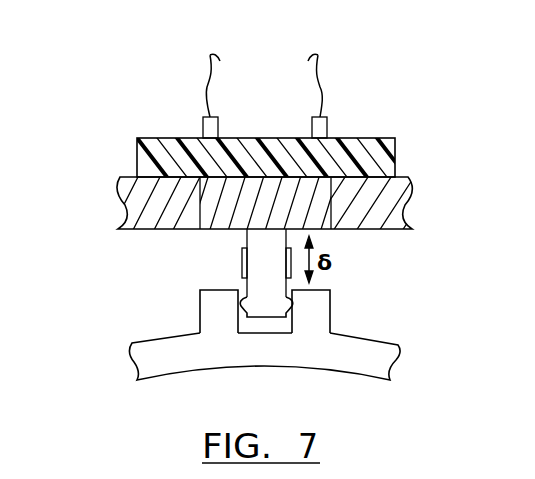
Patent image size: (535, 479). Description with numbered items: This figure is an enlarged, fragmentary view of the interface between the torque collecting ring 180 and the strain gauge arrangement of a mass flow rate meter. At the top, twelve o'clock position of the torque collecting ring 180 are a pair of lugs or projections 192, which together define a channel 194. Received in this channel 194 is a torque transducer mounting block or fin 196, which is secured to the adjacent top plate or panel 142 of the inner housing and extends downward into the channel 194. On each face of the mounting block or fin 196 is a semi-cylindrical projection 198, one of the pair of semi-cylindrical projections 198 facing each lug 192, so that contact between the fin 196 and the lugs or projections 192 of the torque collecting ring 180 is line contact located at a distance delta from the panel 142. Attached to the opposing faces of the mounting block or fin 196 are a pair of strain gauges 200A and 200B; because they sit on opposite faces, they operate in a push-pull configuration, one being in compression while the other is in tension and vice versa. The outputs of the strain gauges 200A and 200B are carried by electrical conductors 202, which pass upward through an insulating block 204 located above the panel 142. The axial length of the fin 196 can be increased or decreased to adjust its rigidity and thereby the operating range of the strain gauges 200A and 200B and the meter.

The electrical conductors 202 is at (320, 87).
The insulating block 204 is at (363, 150).
The top plate or panel 142 is at (127, 188).
The strain gauge 200B is at (290, 248).
The strain gauge 200A is at (245, 260).
The torque transducer mounting block or fin 196 is at (243, 238).
The semi-cylindrical projections 198 is at (290, 304).
The lugs or projections 192 is at (212, 314).
The channel 194 is at (270, 330).
The torque collecting ring 180 is at (377, 358).